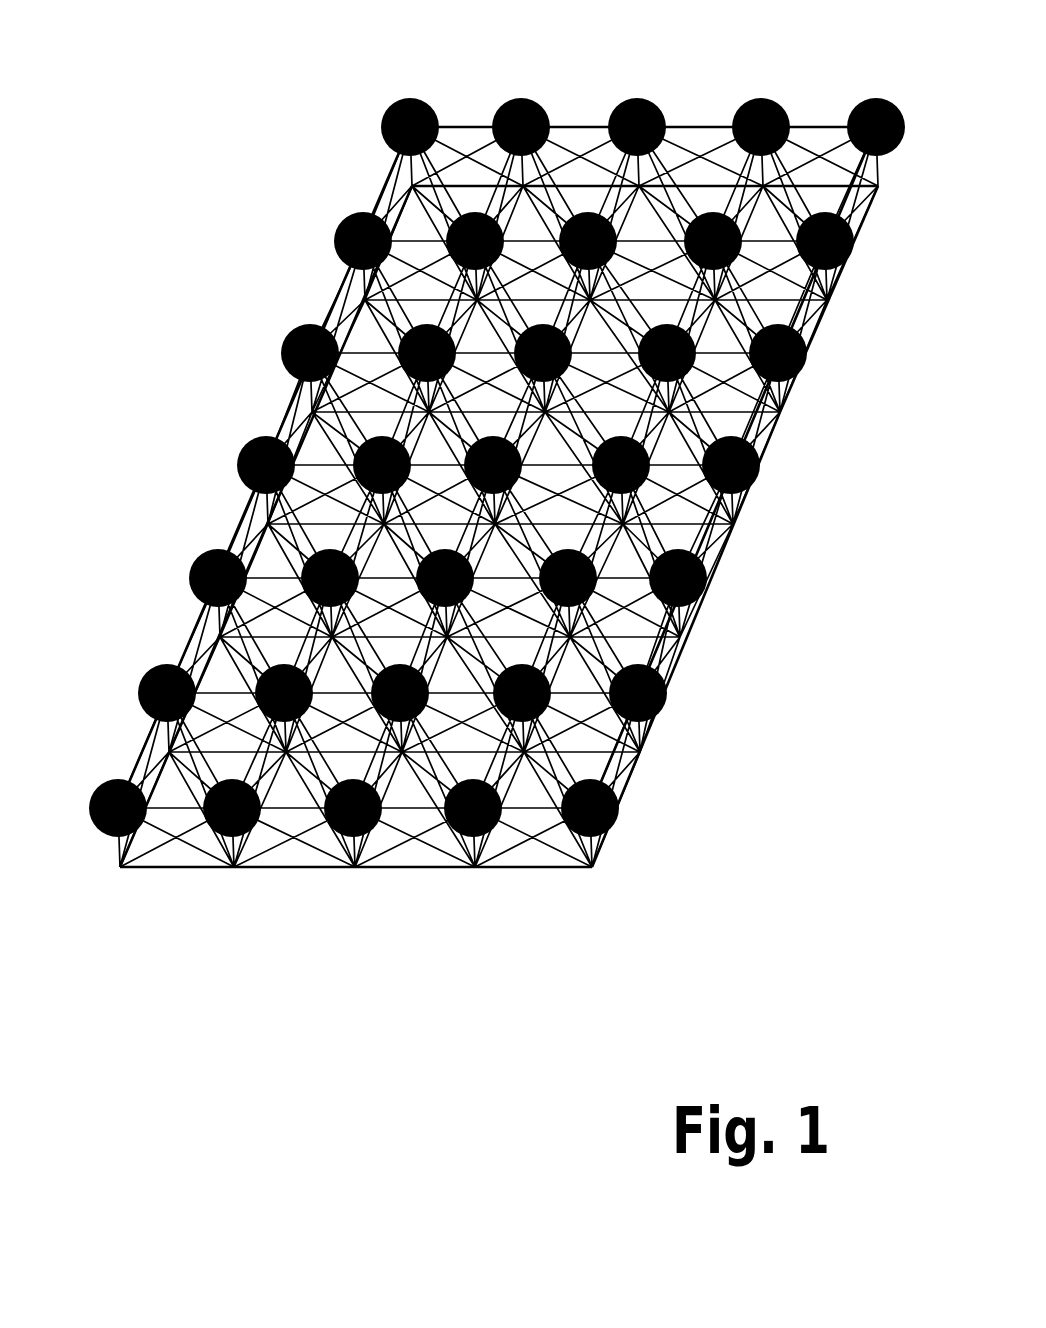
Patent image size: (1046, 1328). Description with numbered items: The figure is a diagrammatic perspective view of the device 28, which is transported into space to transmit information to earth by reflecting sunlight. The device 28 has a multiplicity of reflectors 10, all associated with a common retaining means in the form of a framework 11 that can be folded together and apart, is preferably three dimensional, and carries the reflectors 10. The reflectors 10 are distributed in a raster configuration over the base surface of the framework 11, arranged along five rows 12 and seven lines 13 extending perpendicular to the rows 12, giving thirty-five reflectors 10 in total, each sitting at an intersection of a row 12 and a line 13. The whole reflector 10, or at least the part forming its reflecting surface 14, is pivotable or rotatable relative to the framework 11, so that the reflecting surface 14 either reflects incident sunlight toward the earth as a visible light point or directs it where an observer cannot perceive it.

The reflector 10 is at (530, 105).
The reflecting surface 14 is at (658, 107).
The framework 11 is at (820, 327).
The row 12 is at (197, 897).
The line 13 is at (647, 812).
The device 28 is at (435, 940).